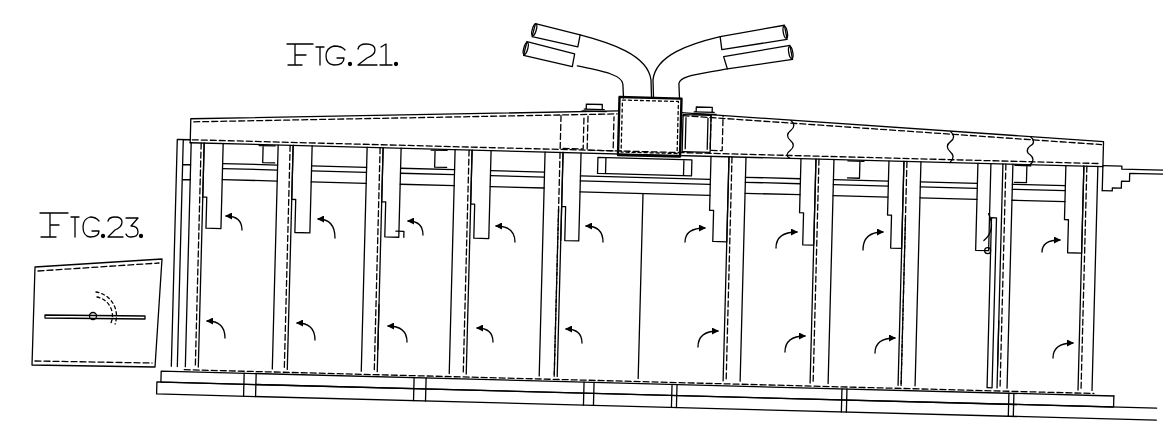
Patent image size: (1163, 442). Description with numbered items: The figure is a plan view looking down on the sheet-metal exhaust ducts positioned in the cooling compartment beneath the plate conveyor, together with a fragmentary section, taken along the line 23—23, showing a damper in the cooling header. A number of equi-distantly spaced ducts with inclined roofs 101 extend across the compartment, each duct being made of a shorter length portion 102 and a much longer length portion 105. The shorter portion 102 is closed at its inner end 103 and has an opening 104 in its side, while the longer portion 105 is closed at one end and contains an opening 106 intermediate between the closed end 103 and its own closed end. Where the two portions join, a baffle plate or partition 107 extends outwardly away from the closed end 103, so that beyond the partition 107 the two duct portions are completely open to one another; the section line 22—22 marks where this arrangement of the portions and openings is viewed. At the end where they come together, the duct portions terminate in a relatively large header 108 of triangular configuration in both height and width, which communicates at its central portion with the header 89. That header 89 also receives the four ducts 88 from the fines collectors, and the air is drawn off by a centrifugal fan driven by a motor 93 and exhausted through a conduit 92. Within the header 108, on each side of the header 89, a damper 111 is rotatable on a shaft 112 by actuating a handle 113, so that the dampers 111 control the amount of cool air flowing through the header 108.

In FIG. 21, the section line 22— 22 is at (970, 213).
In FIG. 21, the section line 23— 23 is at (688, 135).
In FIG. 21, the duct 88 is at (526, 45).
In FIG. 21, the header 89 is at (651, 102).
In FIG. 21, the conduit 92 is at (704, 50).
In FIG. 21, the motor 93 is at (615, 67).
In FIG. 21, the inclined roof 101 is at (365, 258).
In FIG. 21, the shorter length portion 102 is at (219, 228).
In FIG. 21, the closed end 103 is at (985, 253).
In FIG. 21, the opening 104 is at (402, 223).
In FIG. 21, the longer length portion 105 is at (543, 299).
In FIG. 21, the opening 106 is at (382, 321).
In FIG. 21, the baffle plate or partition 107 is at (560, 218).
In FIG. 21, the header 108 is at (462, 98).
In FIG. 23, the header 108 is at (100, 370).
In FIG. 21, the damper 111 is at (566, 108).
In FIG. 23, the damper 111 is at (133, 322).
In FIG. 21, the shaft 112 is at (585, 134).
In FIG. 23, the shaft 112 is at (94, 322).
In FIG. 21, the handle 113 is at (597, 101).
In FIG. 23, the handle 113 is at (88, 306).